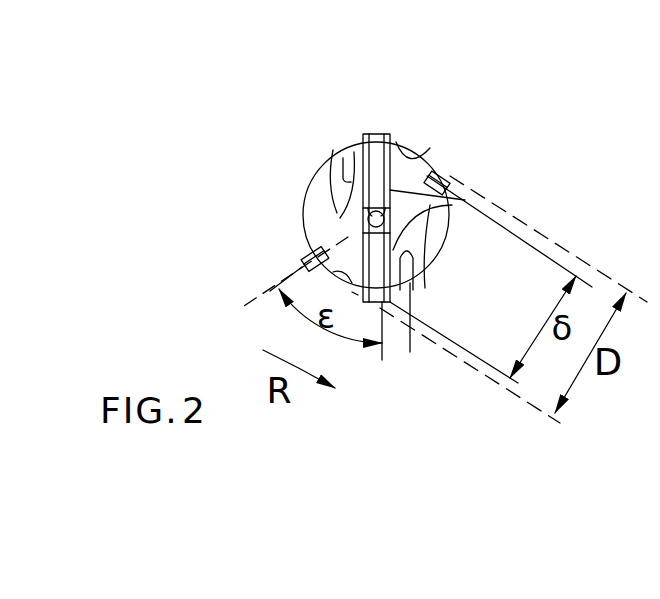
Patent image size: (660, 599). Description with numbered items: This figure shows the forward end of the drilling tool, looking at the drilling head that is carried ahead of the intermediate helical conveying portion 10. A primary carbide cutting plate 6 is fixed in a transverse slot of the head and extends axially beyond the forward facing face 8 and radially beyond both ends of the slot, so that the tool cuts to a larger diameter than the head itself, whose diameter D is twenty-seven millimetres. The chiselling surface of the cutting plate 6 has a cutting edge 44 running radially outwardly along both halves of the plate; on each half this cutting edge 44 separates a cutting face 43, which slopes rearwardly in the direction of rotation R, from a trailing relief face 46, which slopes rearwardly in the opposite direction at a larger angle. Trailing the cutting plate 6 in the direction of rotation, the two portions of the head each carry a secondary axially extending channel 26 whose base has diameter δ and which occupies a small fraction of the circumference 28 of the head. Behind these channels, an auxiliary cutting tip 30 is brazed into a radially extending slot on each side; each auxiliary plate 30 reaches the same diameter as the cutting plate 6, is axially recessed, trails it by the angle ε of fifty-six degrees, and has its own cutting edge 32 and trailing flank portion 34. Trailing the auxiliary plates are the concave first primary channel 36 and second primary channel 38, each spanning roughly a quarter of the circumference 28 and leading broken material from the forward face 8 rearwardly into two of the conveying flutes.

The primary carbide cutting plate 6 is at (380, 137).
The forward facing face 8 is at (417, 339).
The intermediate helical conveying portion 10 is at (362, 217).
The secondary axially extending channel 26 is at (405, 155).
The circumference of the drilling head 28 is at (437, 260).
The auxiliary carbide cutting tip 30 is at (447, 170).
The cutting edge 32 is at (315, 250).
The trailing flank portion 34 is at (318, 237).
The first primary channel 36 is at (322, 177).
The second primary channel 38 is at (437, 230).
The cutting face 43 is at (363, 140).
The cutting edge 44 is at (398, 147).
The trailing relief face 46 is at (465, 200).